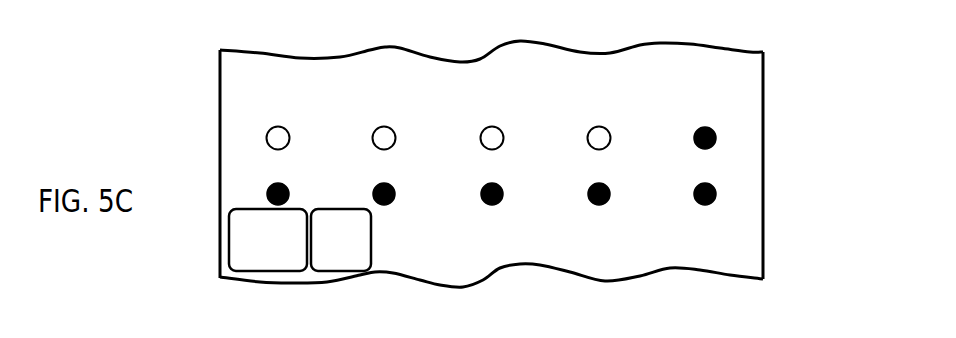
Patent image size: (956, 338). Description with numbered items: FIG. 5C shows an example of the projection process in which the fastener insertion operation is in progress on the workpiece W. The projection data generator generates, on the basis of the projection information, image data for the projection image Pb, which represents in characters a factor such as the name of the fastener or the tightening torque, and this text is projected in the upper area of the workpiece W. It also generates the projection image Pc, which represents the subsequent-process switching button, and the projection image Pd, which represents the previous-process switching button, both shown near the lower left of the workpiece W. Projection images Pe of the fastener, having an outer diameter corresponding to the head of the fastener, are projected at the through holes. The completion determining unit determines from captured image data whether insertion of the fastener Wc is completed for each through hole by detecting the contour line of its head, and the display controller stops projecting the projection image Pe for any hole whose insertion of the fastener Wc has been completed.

The workpiece W is at (763, 98).
The fastener Wc is at (482, 133).
The projection image Pb is at (560, 74).
The projection image of the fastener Pe is at (610, 188).
The projection image representing the previous-process switching button Pd is at (260, 271).
The projection image representing the subsequent-process switching button Pc is at (325, 271).